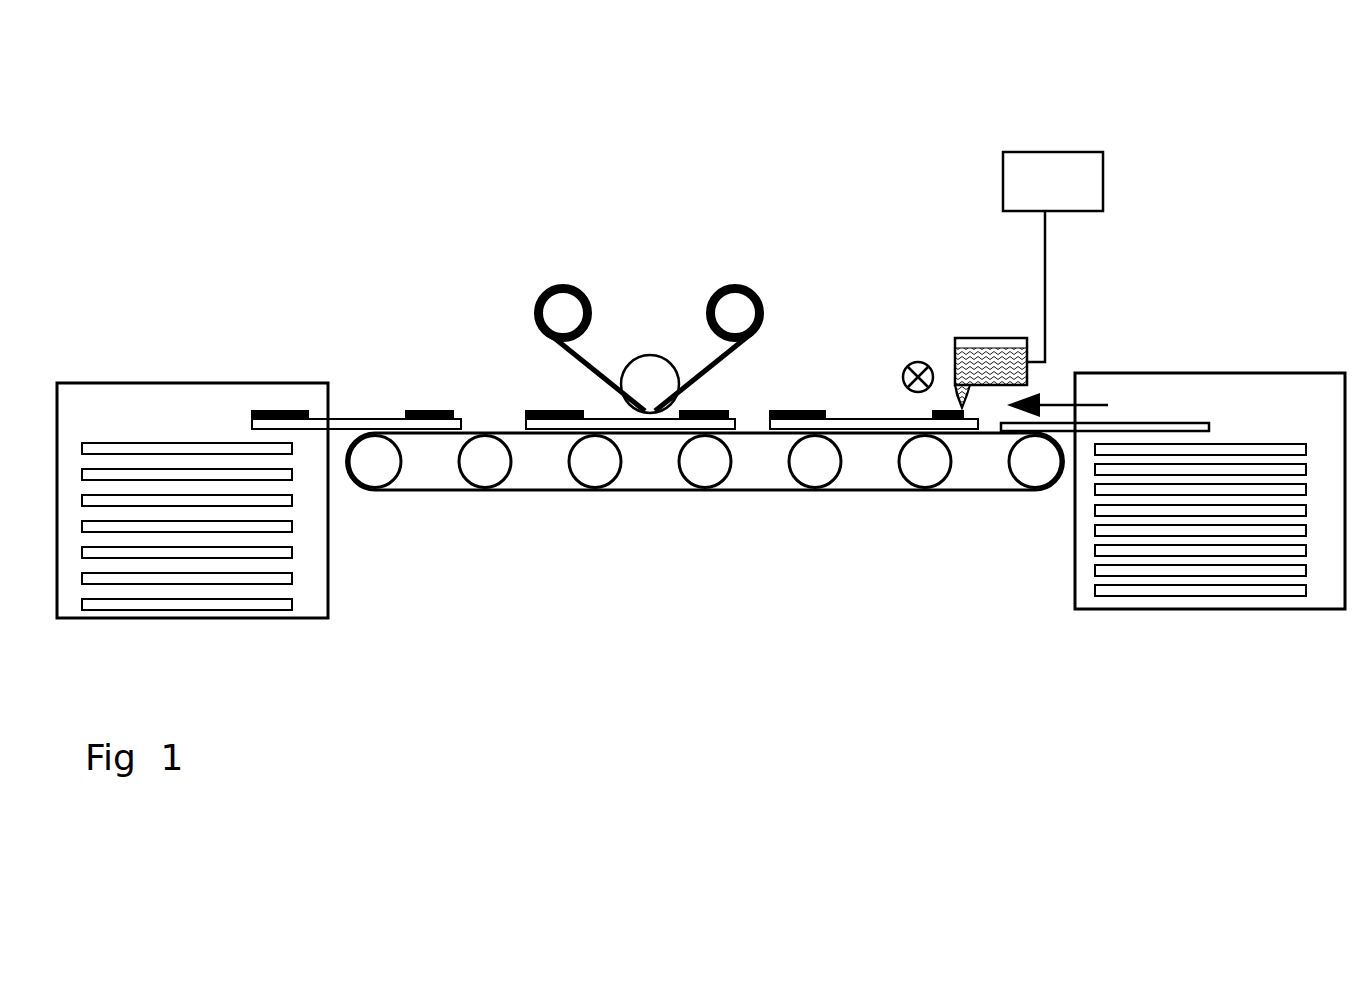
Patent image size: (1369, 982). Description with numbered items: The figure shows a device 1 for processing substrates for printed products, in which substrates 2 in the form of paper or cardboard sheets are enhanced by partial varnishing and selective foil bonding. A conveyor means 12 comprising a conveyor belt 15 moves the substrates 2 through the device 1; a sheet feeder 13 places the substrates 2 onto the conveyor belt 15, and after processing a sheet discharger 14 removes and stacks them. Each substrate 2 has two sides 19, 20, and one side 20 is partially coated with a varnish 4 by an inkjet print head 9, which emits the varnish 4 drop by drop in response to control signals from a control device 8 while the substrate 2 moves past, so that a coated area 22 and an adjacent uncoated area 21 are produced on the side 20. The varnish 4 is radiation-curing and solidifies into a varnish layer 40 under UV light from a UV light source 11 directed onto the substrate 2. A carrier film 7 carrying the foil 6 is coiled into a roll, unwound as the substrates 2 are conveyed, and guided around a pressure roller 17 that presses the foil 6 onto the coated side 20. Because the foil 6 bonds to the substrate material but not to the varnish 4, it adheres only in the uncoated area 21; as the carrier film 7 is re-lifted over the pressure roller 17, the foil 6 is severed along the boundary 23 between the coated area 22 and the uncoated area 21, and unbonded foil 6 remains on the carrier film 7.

The device for processing substrates for printed products 1 is at (178, 122).
The substrate 2 is at (1137, 419).
The varnish 4 is at (980, 360).
The foil 6 is at (700, 385).
The carrier film 7 is at (598, 385).
The control device 8 is at (1103, 190).
The print head 9 is at (956, 337).
The UV light source 11 is at (917, 362).
The conveyor means 12 is at (686, 510).
The sheet feeder 13 is at (1230, 372).
The sheet discharger 14 is at (132, 390).
The conveyor belt 15 is at (853, 491).
The pressure roller 17 is at (663, 356).
The side of substrate 19 is at (1097, 431).
The side of substrate 20 is at (1124, 419).
The uncoated area 21 is at (882, 419).
The coated area 22 is at (808, 411).
The boundary 23 is at (828, 412).
The varnish layer 40 is at (775, 410).